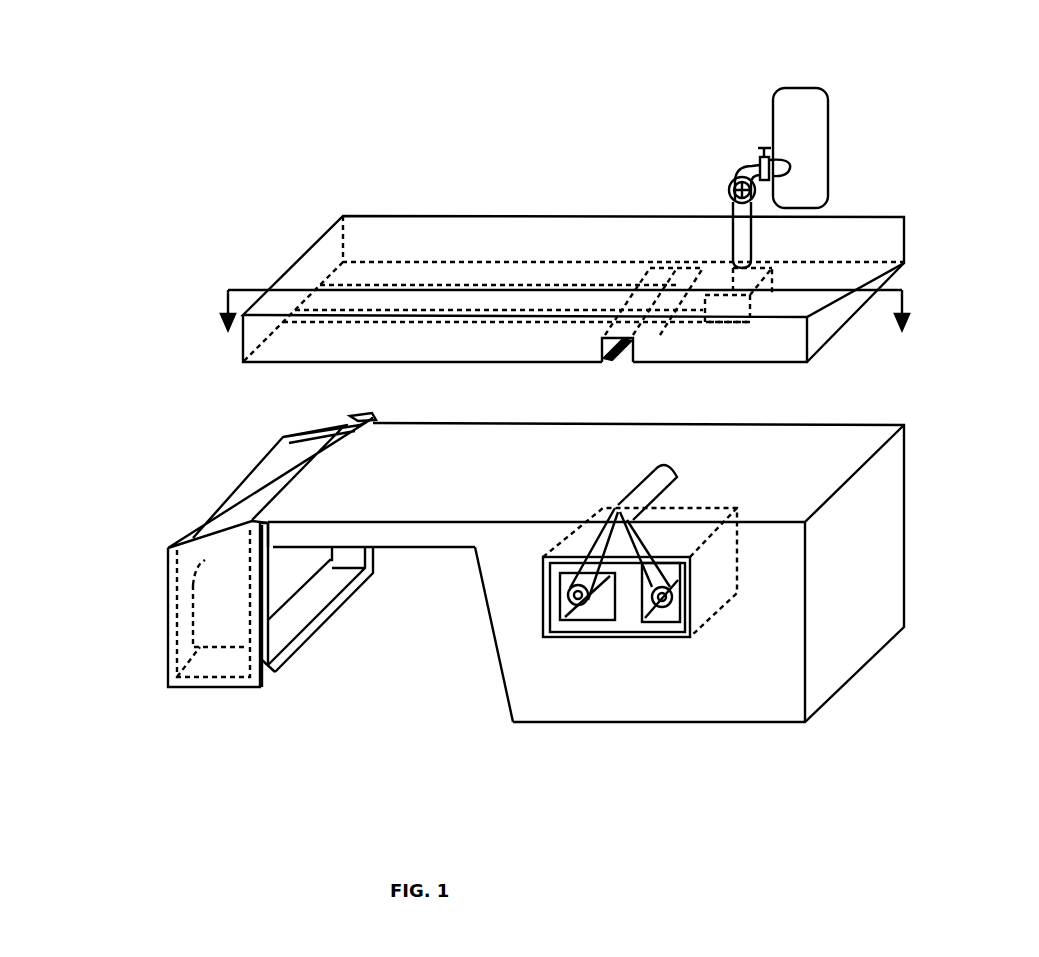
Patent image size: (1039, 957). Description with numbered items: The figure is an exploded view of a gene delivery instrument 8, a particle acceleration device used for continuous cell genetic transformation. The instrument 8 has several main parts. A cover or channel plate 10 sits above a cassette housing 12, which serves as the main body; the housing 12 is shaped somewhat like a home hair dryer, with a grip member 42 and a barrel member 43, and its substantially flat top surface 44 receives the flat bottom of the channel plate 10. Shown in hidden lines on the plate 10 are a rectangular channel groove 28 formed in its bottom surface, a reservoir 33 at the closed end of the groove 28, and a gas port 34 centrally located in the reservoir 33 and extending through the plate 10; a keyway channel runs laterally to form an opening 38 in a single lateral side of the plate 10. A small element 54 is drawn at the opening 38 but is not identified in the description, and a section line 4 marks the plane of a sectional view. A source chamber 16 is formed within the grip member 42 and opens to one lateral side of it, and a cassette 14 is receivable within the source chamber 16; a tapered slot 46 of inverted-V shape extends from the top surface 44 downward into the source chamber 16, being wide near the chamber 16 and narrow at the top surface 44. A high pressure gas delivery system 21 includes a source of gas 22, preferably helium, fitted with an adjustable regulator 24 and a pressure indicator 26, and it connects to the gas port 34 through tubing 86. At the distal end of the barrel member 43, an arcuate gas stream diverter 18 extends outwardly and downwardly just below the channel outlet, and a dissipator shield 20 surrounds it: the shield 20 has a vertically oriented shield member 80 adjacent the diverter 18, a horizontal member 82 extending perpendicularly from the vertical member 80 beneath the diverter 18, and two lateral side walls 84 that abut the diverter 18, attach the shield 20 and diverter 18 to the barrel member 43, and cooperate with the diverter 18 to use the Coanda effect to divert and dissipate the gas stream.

The gene delivery instrument 8 is at (283, 241).
The channel plate 10 is at (422, 186).
The channel groove 28 is at (347, 300).
The gas port 34 is at (770, 272).
The reservoir 33 is at (728, 308).
The opening 38 is at (623, 363).
The pin 54 is at (614, 345).
The section line 4- 4 is at (563, 324).
The source of gas 22 is at (813, 140).
The adjustable regulator 24 is at (761, 145).
The high pressure gas delivery system 21 is at (748, 153).
The pressure indicator 26 is at (733, 177).
The tubing 86 is at (742, 215).
The top surface 44 is at (825, 430).
The cassette housing 12 is at (512, 727).
The barrel member 43 is at (405, 540).
The grip member 42 is at (510, 632).
The vertically oriented shield member 80 is at (250, 468).
The lateral side walls 84 is at (372, 418).
The dissipator shield 20 is at (192, 680).
The arcuate gas stream diverter 18 is at (225, 578).
The horizontal member 82 is at (280, 640).
The cassette 14 is at (628, 608).
The source chamber 16 is at (665, 637).
The tapered slot 46 is at (592, 522).